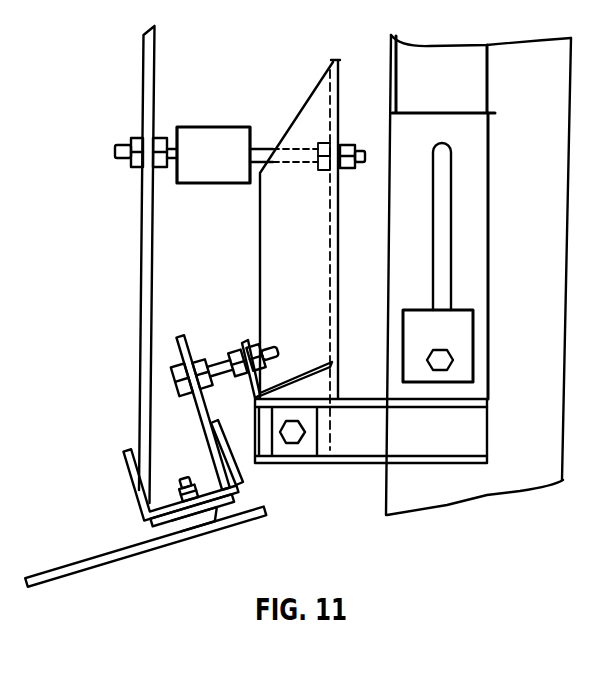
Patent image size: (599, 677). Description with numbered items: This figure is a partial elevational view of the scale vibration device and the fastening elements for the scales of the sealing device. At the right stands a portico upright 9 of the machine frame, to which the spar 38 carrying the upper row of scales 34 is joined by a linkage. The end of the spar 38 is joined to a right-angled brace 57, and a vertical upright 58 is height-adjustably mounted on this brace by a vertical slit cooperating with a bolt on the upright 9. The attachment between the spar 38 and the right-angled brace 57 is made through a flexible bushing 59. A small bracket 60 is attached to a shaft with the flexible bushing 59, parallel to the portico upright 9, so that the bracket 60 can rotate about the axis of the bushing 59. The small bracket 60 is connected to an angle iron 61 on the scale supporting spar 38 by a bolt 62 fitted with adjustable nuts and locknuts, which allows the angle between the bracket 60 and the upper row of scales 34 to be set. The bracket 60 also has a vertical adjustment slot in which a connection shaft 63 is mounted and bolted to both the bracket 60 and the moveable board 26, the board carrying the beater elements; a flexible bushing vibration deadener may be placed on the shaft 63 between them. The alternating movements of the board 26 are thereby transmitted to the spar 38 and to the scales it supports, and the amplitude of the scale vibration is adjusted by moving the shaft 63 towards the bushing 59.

The portico upright 9 is at (558, 74).
The moveable board 26 is at (150, 257).
The upper row of scales 34 is at (45, 587).
The spar 38 is at (143, 502).
The right-angled brace 57 is at (490, 439).
The vertical upright 58 is at (473, 192).
The flexible bushing 59 is at (295, 437).
The small bracket 60 is at (291, 255).
The angle iron 61 is at (180, 352).
The bolt 62 is at (222, 364).
The connection shaft 63 is at (257, 147).